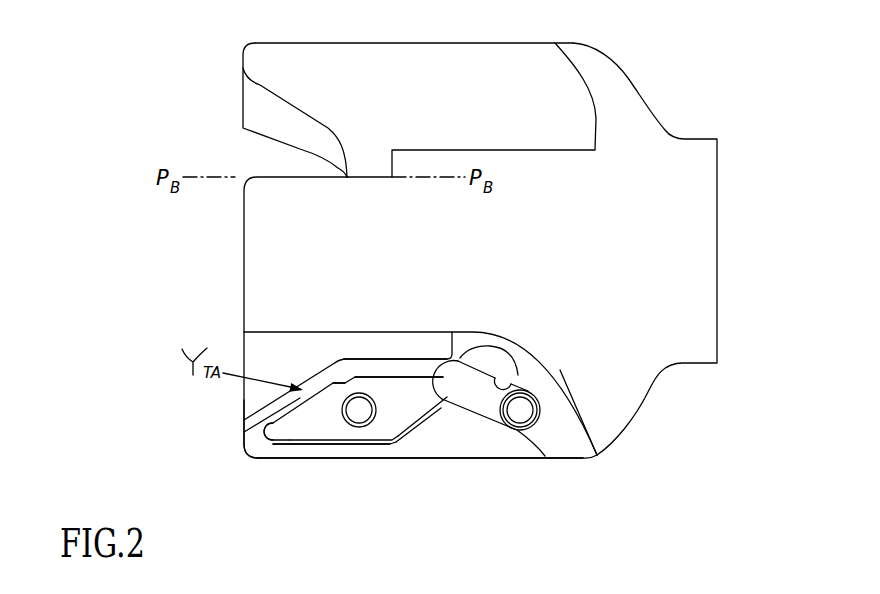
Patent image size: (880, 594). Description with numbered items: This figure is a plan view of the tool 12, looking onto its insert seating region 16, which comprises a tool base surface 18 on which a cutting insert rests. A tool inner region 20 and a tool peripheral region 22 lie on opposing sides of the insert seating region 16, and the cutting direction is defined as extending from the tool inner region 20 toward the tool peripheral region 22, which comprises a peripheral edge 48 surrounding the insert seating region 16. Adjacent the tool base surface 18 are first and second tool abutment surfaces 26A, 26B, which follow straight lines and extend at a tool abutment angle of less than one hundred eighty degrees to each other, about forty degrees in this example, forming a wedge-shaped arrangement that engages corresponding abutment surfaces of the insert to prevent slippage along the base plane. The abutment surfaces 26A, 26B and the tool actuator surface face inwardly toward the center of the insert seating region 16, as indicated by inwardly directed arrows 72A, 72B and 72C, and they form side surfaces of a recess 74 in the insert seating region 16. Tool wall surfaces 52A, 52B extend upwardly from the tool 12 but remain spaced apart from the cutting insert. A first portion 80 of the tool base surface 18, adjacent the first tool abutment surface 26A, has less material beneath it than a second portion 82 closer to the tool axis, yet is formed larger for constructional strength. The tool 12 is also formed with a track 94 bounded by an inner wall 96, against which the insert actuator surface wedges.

The tool 12 is at (682, 202).
The insert seating region 16 is at (288, 431).
The tool base surface 18 is at (380, 444).
The tool inner region 20 is at (468, 458).
The tool peripheral region 22 is at (238, 461).
The first tool abutment surface 26A is at (318, 446).
The second tool abutment surface 26B is at (326, 390).
The peripheral edge 48 is at (244, 437).
The tool wall surface 52A is at (381, 420).
The tool wall surface 52B is at (416, 366).
The inwardly directed arrow 72A is at (374, 420).
The inwardly directed arrow 72B is at (332, 398).
The inwardly directed arrow 72C is at (418, 416).
The recess 74 is at (458, 335).
The first portion of the tool base surface 80 is at (303, 463).
The second portion of the tool base surface 82 is at (407, 350).
The track 94 is at (505, 440).
The inner wall 96 is at (512, 379).